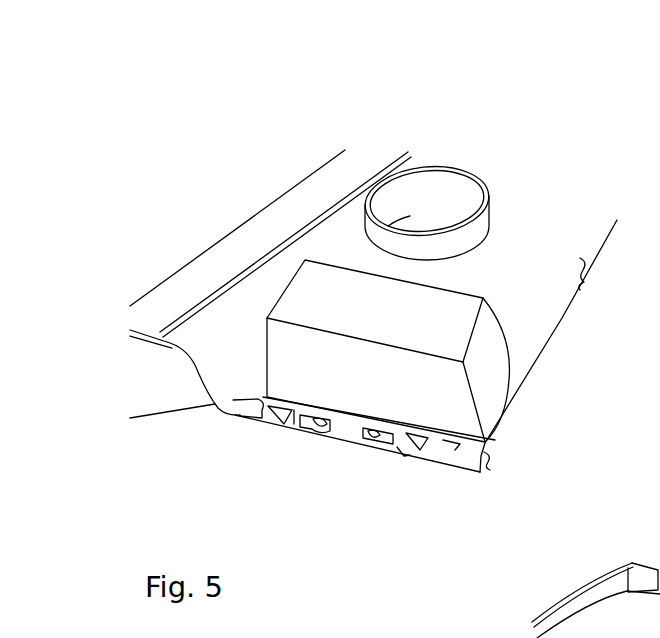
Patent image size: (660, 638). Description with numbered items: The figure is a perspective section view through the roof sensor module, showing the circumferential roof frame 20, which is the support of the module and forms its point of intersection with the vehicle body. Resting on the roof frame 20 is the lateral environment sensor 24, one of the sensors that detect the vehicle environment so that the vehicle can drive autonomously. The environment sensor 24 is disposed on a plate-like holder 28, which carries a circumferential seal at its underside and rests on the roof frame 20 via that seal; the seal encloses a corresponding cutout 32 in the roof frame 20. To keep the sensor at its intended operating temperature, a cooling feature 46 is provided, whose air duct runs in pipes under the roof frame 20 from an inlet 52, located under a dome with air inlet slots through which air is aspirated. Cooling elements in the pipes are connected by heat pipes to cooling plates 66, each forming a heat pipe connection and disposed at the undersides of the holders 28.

The roof frame 20 is at (547, 282).
The environment sensor 24 is at (488, 400).
The holder 28 is at (428, 437).
The cutout 32 is at (283, 424).
The cooling feature 46 is at (481, 193).
The inlet 52 is at (428, 192).
The cooling plate 66 is at (342, 421).